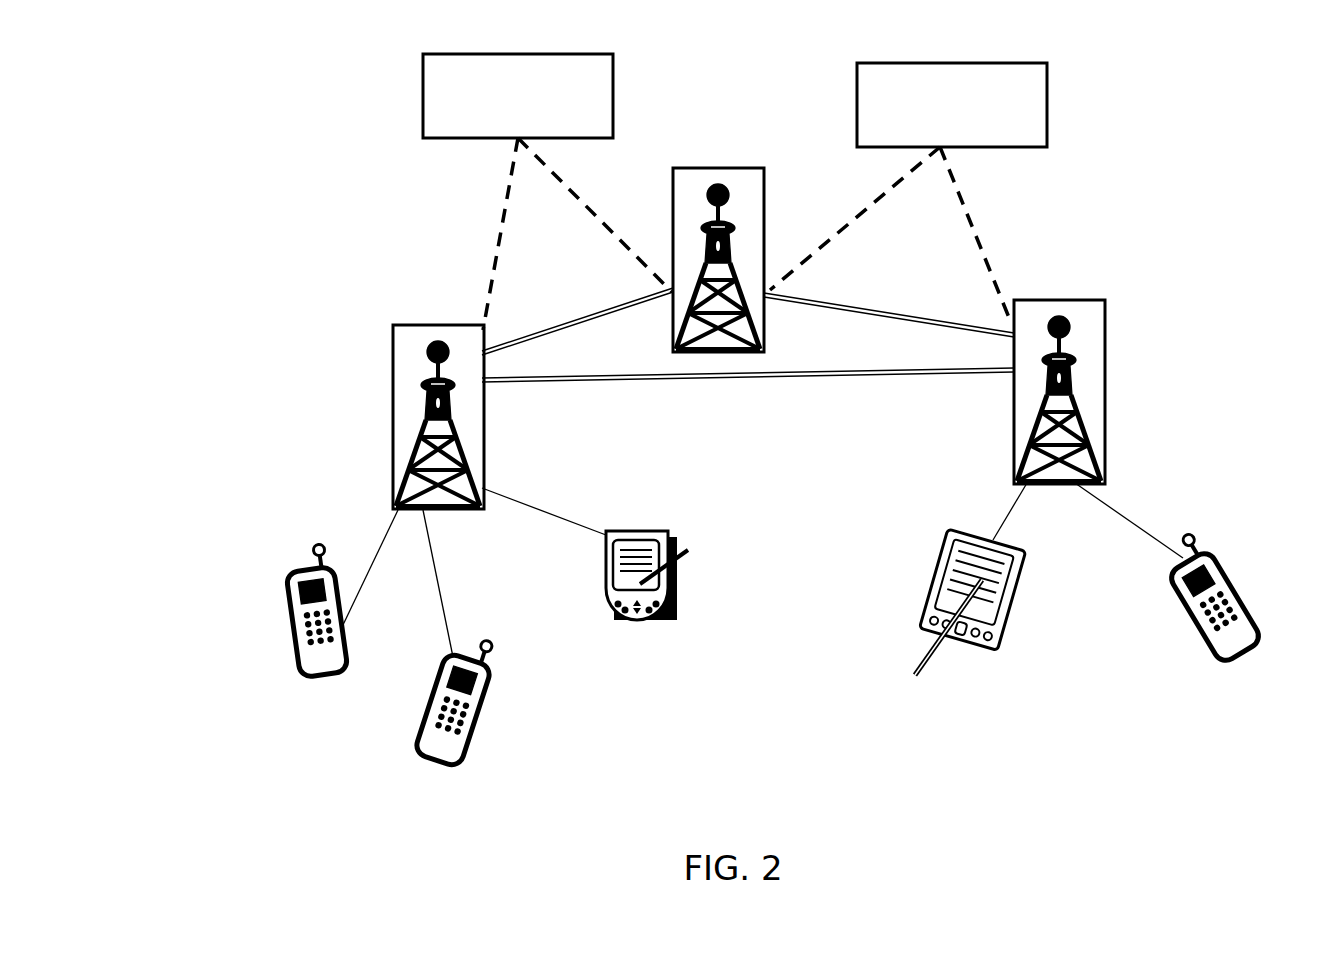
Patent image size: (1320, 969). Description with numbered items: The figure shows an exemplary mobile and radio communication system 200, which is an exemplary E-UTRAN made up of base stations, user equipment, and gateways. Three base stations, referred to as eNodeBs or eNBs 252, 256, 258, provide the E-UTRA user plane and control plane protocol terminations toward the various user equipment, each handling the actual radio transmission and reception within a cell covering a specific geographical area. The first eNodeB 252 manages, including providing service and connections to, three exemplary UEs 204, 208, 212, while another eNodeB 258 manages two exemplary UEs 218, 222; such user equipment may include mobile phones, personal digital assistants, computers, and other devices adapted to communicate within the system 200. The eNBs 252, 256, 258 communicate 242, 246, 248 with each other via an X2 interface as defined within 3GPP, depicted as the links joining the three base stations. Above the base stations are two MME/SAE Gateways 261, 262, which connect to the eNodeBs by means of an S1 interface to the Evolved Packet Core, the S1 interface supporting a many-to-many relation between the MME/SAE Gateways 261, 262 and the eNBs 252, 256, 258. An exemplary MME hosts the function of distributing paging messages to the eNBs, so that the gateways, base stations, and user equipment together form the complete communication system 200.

The mobile and/or radio communication system 200 is at (326, 209).
The UE 204 is at (305, 680).
The UE 208 is at (430, 764).
The UE 212 is at (630, 620).
The UE 218 is at (957, 648).
The UE 222 is at (1202, 635).
The communication 242 is at (778, 384).
The communication 246 is at (557, 330).
The communication 248 is at (866, 313).
The eNodeB 252 is at (396, 324).
The eNodeB 256 is at (737, 168).
The eNodeB 258 is at (1037, 300).
The MME/SAE Gateway 261 is at (613, 103).
The MME/SAE Gateway 262 is at (1047, 128).